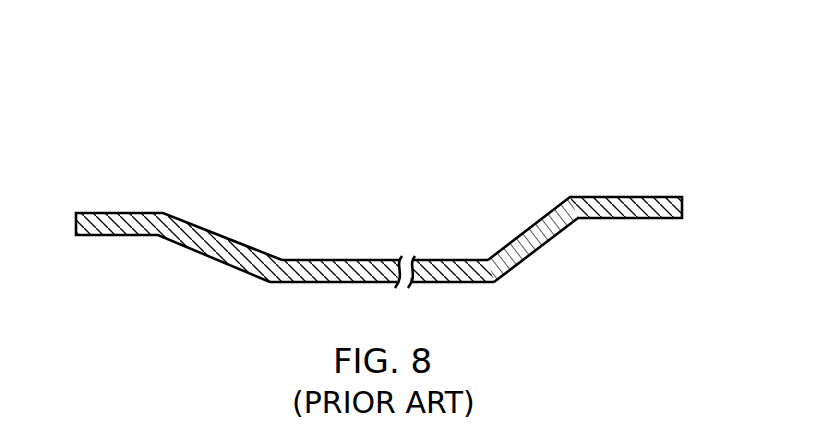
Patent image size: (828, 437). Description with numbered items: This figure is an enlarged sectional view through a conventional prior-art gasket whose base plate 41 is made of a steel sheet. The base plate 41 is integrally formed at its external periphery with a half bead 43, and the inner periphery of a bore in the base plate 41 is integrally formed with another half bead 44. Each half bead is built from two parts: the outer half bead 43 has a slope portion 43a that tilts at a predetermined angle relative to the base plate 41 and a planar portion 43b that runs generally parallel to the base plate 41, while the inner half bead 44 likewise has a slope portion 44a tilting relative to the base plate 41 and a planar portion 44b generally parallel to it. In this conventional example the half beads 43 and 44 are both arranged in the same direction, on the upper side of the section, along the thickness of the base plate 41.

The base plate 41 is at (377, 270).
The half bead 43 is at (230, 107).
The slope portion 43a is at (205, 242).
The planar portion 43b is at (113, 222).
The half bead 44 is at (637, 100).
The slope portion 44a is at (523, 233).
The planar portion 44b is at (630, 210).